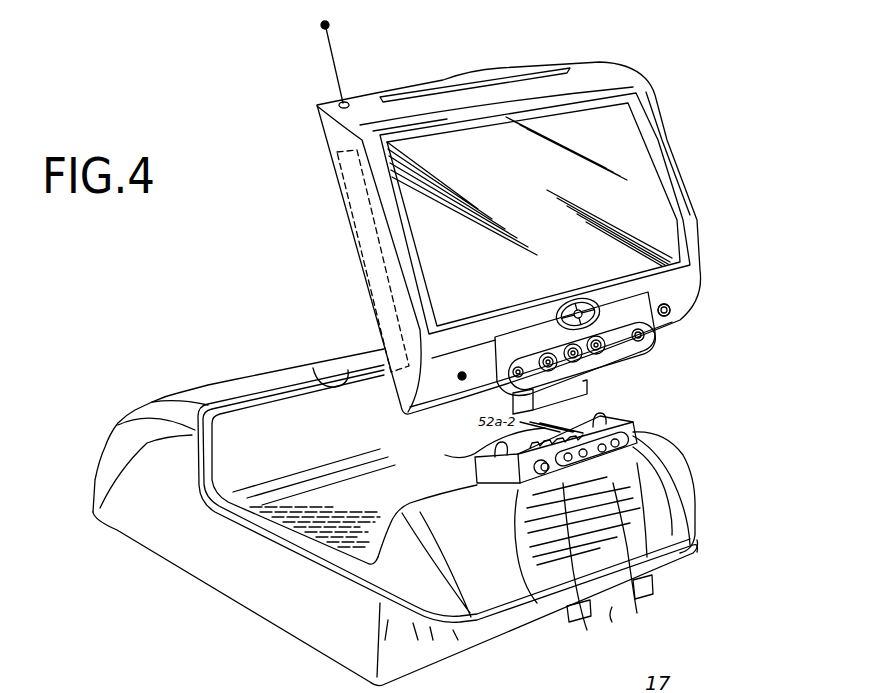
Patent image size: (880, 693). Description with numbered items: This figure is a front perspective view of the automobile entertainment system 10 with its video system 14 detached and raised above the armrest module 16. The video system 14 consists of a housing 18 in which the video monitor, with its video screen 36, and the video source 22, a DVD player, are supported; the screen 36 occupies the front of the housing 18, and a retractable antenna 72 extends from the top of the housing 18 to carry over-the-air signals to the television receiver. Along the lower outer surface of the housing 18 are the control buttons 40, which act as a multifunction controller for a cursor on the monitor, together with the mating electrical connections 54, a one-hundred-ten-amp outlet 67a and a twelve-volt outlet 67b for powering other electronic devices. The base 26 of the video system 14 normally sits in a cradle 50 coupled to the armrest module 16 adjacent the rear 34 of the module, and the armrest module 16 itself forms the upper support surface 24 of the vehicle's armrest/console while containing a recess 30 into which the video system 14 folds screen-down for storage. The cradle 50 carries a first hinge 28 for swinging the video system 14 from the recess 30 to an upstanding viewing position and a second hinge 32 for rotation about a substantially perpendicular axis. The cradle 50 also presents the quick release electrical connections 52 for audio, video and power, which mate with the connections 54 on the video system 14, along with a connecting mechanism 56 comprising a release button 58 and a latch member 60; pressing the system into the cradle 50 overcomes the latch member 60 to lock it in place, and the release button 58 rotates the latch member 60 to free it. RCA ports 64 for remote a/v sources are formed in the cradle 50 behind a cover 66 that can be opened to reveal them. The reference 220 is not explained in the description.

The automobile entertainment system 10 is at (222, 283).
The video system 14 is at (483, 68).
The armrest module 16 is at (328, 362).
The housing 18 is at (586, 72).
The video source 22 is at (352, 175).
The upper support surface 24 is at (237, 381).
The base 26 is at (513, 410).
The first hinge 28 is at (623, 600).
The recess 30 is at (334, 496).
The second hinge 32 is at (675, 508).
The rear 34 is at (488, 592).
The video screen 36 is at (521, 229).
The control buttons 40 is at (662, 331).
The cradle 50 is at (511, 476).
The quick release electrical connections 52 is at (560, 420).
The mating electrical connections 54 is at (585, 380).
The connecting mechanism 56 is at (470, 437).
The release button 58 is at (580, 612).
The latch member 60 is at (458, 472).
The RCA ports 64 is at (633, 434).
The cover 66 is at (687, 480).
The retractable antenna 72 is at (337, 66).
The base 220 is at (265, 680).
The 110 A outlet 67a is at (450, 360).
The 12 V outlet 67b is at (670, 310).